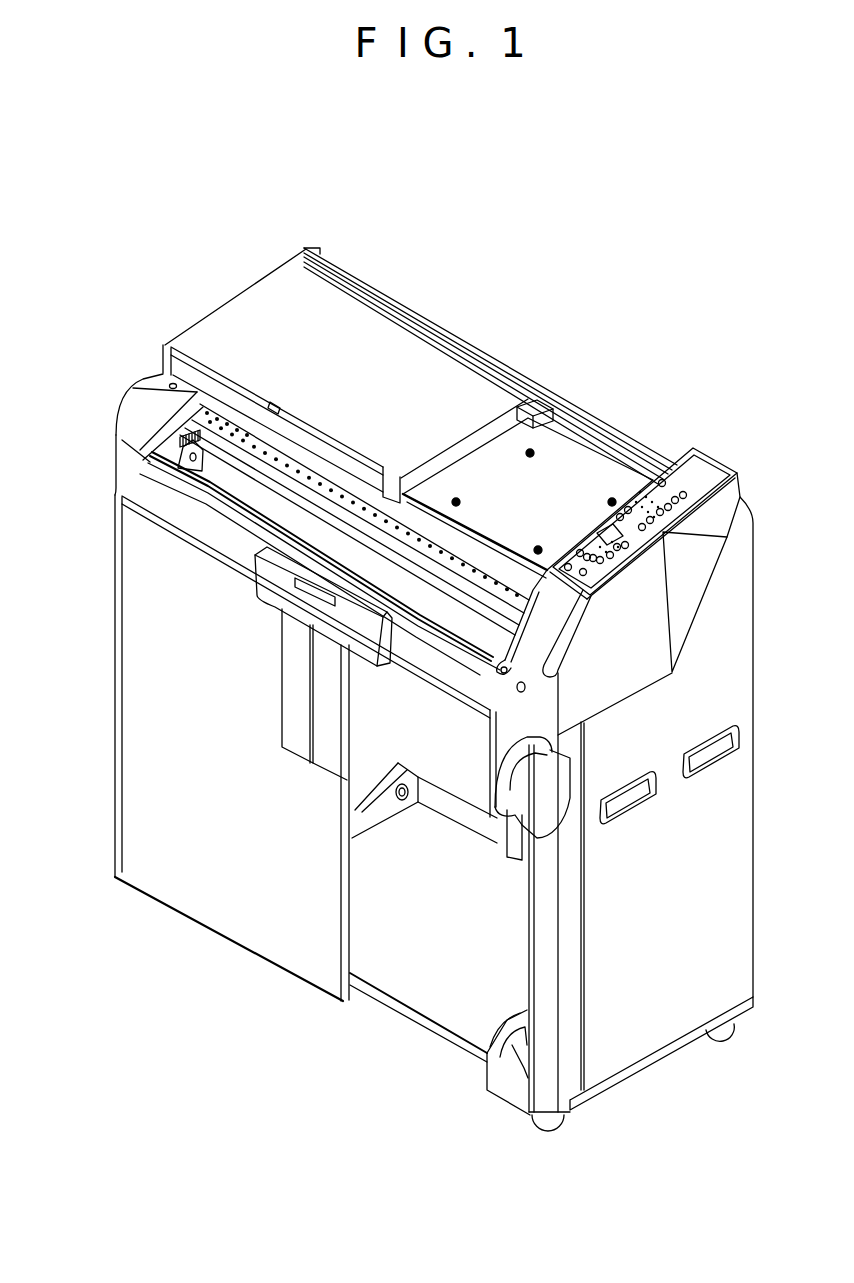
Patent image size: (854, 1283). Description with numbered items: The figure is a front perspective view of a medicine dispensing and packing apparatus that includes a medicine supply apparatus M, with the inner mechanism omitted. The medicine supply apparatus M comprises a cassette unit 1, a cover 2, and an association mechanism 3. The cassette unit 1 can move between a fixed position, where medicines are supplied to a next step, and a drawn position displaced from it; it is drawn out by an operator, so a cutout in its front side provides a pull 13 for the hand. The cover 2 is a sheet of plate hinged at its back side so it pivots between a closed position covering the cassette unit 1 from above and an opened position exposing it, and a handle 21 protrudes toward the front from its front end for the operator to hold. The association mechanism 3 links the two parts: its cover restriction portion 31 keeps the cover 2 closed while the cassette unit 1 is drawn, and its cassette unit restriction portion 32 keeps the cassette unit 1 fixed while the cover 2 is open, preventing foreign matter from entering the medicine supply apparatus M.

The medicine supply apparatus M is at (388, 264).
The cassette unit 1 is at (152, 394).
The cover 2 is at (433, 380).
The association mechanism 3 is at (383, 342).
The cover restriction portion 31 is at (177, 340).
The cassette unit restriction portion 32 is at (410, 303).
The pull 13 is at (256, 408).
The handle 21 is at (277, 407).